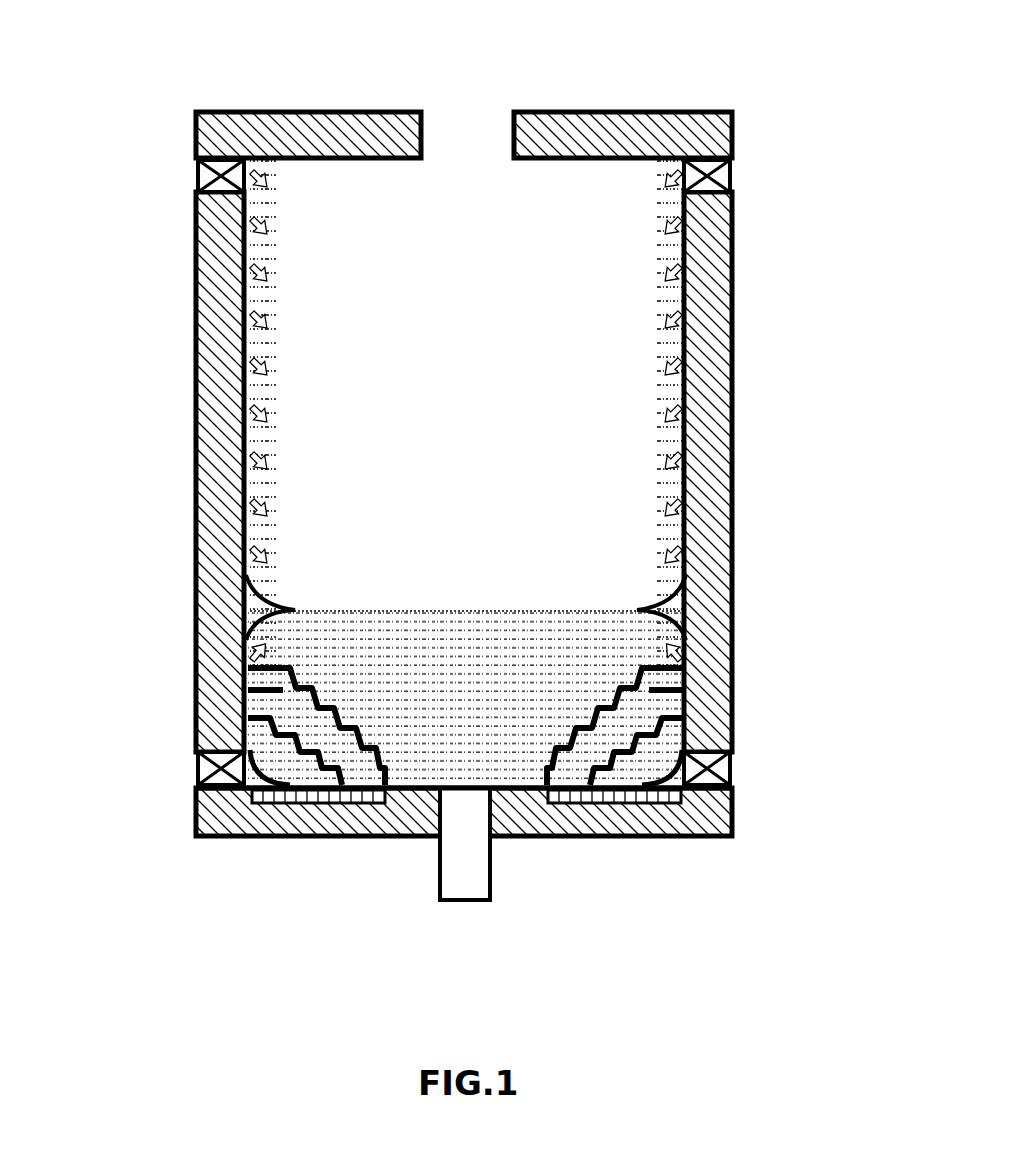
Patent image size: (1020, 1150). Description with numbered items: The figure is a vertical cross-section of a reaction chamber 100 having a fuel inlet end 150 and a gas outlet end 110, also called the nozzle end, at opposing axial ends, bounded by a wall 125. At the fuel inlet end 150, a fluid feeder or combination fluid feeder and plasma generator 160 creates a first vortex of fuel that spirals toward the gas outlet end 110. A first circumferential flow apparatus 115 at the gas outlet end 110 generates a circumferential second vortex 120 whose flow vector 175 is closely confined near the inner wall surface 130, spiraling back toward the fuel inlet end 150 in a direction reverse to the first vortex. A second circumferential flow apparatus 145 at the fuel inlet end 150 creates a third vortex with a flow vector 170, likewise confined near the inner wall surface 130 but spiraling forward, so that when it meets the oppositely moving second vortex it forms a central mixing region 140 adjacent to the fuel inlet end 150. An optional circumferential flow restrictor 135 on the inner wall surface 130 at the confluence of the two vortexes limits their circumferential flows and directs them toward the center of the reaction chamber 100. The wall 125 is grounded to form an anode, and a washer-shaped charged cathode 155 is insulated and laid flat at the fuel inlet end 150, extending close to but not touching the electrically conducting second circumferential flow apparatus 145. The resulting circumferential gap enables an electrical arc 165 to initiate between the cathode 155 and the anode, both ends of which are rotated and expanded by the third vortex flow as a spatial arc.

The reaction chamber 100 is at (152, 96).
The gas outlet end 110 is at (595, 138).
The first circumferential flow apparatus 115 is at (725, 176).
The second vortex 120 is at (670, 300).
The wall 125 is at (706, 333).
The inner wall surface 130 is at (662, 540).
The circumferential flow restrictor 135 is at (688, 605).
The central mixing region 140 is at (462, 697).
The second circumferential flow apparatus 145 is at (742, 768).
The fuel inlet end 150 is at (708, 817).
The cathode 155 is at (625, 800).
The fluid feeder 160 is at (470, 875).
The electrical arc 165 is at (310, 735).
The flow vector 170 is at (250, 640).
The flow vector 175 is at (250, 553).